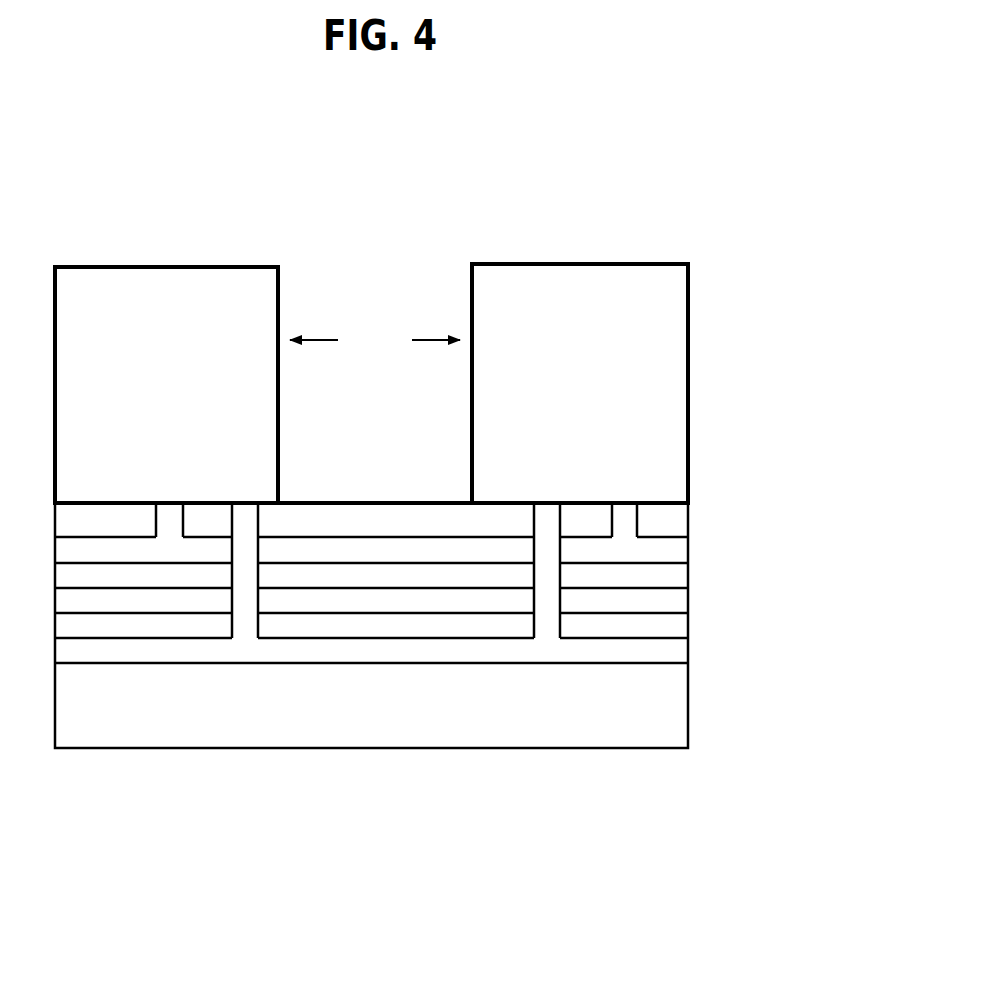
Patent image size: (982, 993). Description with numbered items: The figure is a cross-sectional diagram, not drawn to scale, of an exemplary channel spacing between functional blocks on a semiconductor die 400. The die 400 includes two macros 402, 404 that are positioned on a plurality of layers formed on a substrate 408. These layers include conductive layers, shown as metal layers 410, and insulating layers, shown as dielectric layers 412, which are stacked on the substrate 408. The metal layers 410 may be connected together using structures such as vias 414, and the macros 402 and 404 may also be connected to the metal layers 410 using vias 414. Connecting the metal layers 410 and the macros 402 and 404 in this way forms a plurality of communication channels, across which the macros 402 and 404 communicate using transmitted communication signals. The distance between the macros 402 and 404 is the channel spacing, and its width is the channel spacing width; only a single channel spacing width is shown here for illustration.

The semiconductor die 400 is at (666, 128).
The macro 402 is at (151, 406).
The macro 404 is at (564, 403).
The substrate 408 is at (432, 738).
The metal layers 410 is at (700, 645).
The dielectric layers 412 is at (108, 542).
The vias 414 is at (604, 518).